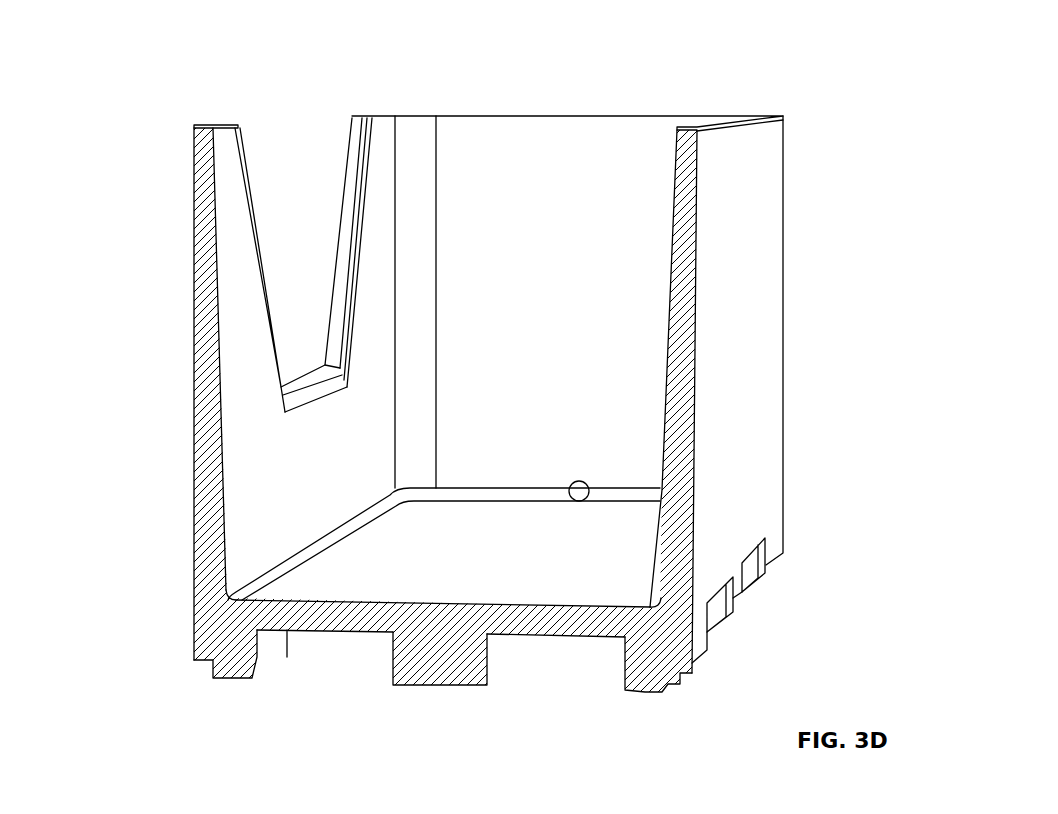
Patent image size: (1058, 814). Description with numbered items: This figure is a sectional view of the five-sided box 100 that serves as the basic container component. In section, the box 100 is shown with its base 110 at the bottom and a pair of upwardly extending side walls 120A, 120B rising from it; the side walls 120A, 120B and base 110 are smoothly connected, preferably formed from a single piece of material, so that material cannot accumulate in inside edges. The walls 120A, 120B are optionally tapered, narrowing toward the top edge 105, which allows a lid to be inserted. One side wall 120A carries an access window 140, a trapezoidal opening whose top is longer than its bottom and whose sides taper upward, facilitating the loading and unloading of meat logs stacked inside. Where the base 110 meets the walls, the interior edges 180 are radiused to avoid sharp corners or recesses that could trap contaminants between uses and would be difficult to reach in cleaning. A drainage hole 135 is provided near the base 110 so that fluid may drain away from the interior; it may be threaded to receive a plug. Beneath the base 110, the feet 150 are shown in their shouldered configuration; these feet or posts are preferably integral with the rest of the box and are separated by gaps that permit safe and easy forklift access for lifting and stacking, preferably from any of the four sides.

The five-sided box 100 is at (142, 44).
The top edge 105 is at (212, 126).
The base 110 is at (567, 624).
The side wall 120A is at (186, 374).
The side wall 120B is at (720, 380).
The drainage hole 135 is at (589, 491).
The access window 140 is at (307, 303).
The feet 150 is at (236, 680).
The radiused edges 180 is at (224, 599).